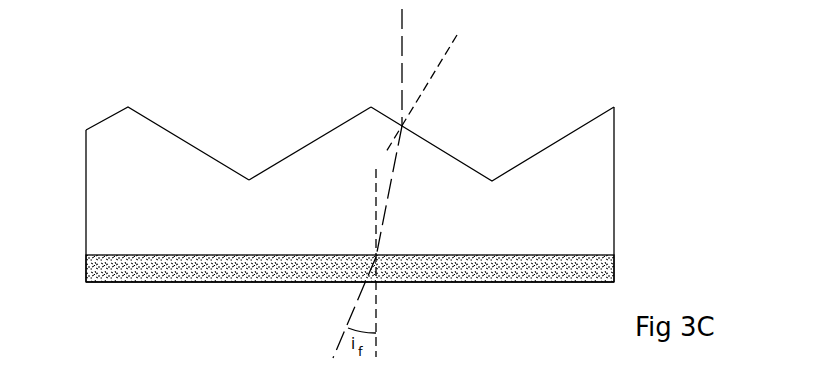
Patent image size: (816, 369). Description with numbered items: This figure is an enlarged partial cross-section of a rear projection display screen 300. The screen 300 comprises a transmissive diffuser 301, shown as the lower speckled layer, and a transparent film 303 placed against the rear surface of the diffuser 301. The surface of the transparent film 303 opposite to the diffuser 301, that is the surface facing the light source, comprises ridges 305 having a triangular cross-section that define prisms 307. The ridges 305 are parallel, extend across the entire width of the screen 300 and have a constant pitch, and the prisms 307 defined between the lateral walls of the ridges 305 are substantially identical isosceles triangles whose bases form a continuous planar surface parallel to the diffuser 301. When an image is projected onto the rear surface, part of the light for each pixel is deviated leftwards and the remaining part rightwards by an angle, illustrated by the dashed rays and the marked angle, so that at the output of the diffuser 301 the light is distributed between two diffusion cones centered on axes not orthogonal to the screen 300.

The rear projection display screen 300 is at (649, 169).
The transmissive diffuser 301 is at (120, 267).
The transparent film 303 is at (123, 215).
The ridges 305 is at (249, 156).
The prisms 307 is at (318, 160).